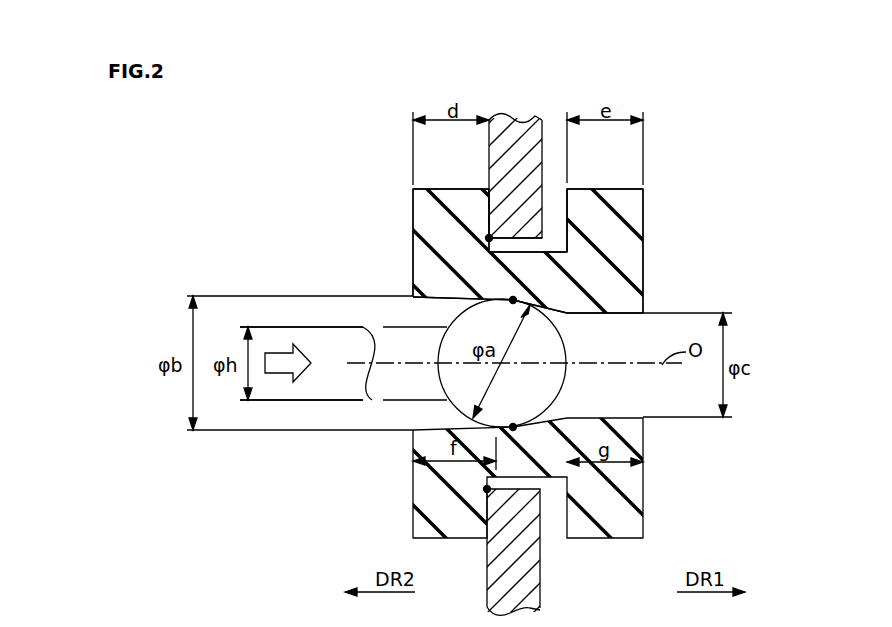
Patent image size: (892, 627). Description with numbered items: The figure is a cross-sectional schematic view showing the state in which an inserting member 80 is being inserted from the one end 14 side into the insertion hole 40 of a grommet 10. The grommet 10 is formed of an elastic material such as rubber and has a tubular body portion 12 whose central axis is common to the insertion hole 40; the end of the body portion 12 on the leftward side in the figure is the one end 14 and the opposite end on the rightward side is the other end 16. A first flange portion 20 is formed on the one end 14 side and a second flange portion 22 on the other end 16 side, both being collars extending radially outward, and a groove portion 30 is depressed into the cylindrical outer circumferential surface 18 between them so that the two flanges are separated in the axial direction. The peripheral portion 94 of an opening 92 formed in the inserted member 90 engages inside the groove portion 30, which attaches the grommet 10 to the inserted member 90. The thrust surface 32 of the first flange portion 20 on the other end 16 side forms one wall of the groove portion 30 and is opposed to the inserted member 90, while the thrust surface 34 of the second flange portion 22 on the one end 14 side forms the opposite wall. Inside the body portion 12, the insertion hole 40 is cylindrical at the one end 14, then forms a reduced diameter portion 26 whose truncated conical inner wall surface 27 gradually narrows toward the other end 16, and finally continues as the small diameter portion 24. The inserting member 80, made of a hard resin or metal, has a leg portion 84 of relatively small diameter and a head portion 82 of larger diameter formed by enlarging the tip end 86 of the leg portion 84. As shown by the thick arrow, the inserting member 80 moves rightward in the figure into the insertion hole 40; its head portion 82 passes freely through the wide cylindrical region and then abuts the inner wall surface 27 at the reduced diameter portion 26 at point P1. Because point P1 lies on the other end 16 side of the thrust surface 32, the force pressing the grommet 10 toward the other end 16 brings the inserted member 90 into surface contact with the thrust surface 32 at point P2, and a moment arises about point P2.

The grommet 10 is at (433, 267).
The body portion 12 is at (433, 282).
The one end 14 is at (413, 225).
The other end 16 is at (645, 222).
The outer circumferential surface 18 is at (590, 205).
The first flange portion 20 is at (432, 200).
The second flange portion 22 is at (623, 200).
The small diameter portion 24 is at (610, 303).
The reduced diameter portion 26 is at (548, 303).
The inner wall surface 27 is at (555, 310).
The groove portion 30 is at (550, 238).
The thrust surface 32 is at (486, 240).
The thrust surface 34 is at (566, 220).
The insertion hole 40 is at (425, 418).
The inserting member 80 is at (408, 343).
The head portion 82 is at (470, 418).
The leg portion 84 is at (383, 348).
The tip end 86 is at (447, 370).
The inserted member 90 is at (522, 140).
The opening 92 is at (493, 236).
The peripheral portion 94 is at (508, 233).
The point P1 is at (513, 300).
The point P2 is at (486, 238).